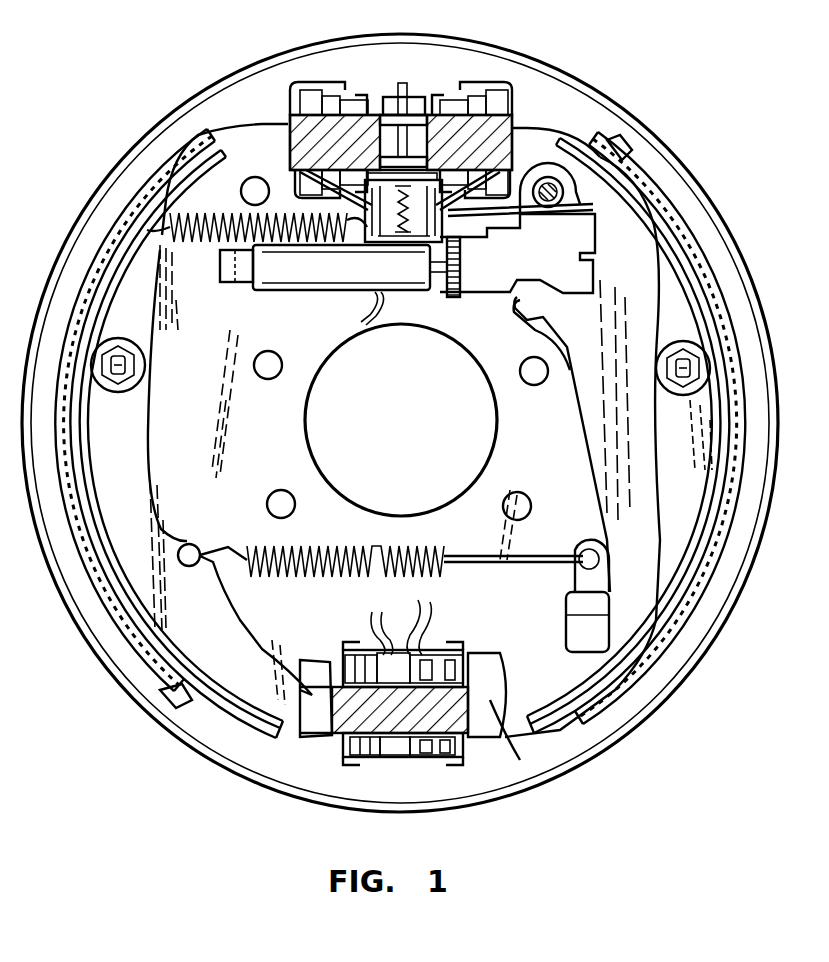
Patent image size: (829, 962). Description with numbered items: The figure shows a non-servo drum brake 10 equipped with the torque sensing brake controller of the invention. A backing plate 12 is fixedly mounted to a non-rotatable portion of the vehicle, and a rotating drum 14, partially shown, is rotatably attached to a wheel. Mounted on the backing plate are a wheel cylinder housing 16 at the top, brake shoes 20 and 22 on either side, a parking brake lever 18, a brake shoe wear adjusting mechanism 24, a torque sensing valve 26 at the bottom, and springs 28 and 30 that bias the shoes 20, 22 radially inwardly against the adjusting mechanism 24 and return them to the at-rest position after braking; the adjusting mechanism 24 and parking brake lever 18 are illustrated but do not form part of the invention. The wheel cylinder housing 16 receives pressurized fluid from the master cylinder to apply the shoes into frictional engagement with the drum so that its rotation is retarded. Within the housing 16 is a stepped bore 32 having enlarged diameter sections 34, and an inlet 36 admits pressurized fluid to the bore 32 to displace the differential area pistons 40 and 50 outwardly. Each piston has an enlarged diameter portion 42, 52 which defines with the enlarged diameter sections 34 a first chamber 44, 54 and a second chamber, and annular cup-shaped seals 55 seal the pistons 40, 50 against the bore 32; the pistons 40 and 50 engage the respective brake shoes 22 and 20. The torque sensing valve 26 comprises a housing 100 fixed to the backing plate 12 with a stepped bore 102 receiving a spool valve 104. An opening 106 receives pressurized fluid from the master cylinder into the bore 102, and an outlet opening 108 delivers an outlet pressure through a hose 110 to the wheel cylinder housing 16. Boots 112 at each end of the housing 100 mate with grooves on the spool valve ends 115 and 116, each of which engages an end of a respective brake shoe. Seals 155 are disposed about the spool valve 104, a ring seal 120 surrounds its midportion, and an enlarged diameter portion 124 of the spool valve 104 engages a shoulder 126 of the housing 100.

The non-servo drum brake 10 is at (160, 779).
The backing plate 12 is at (282, 431).
The rotating drum 14 is at (158, 698).
The wheel cylinder housing 16 is at (297, 66).
The parking brake lever 18 is at (645, 501).
The brake shoe 20 is at (134, 309).
The brake shoe 22 is at (687, 328).
The brake shoe wear adjusting mechanism 24 is at (345, 292).
The torque sensing valve 26 is at (417, 753).
The spring 28 is at (165, 240).
The spring 30 is at (521, 559).
The stepped bore 32 is at (414, 75).
The enlarged diameter sections 34 is at (345, 98).
The inlet 36 is at (396, 90).
The differential area piston 40 is at (522, 126).
The enlarged diameter portion 42 is at (446, 94).
The first chamber 44 is at (459, 94).
The differential area piston 50 is at (288, 116).
The enlarged diameter portion 52 is at (350, 102).
The first chamber 54 is at (342, 93).
The annular cup-shaped seals 55 is at (408, 113).
The housing 100 is at (427, 660).
The stepped bore 102 is at (380, 753).
The spool valve 104 is at (463, 740).
The opening 106 is at (427, 617).
The outlet opening 108 is at (372, 647).
The hose 110 is at (378, 303).
The boots 112 is at (452, 657).
The spool valve end 115 is at (332, 740).
The spool valve end 116 is at (500, 733).
The ring seal 120 is at (382, 747).
The enlarged diameter portion 124 is at (421, 652).
The shoulder 126 is at (400, 747).
The seals 155 is at (370, 753).